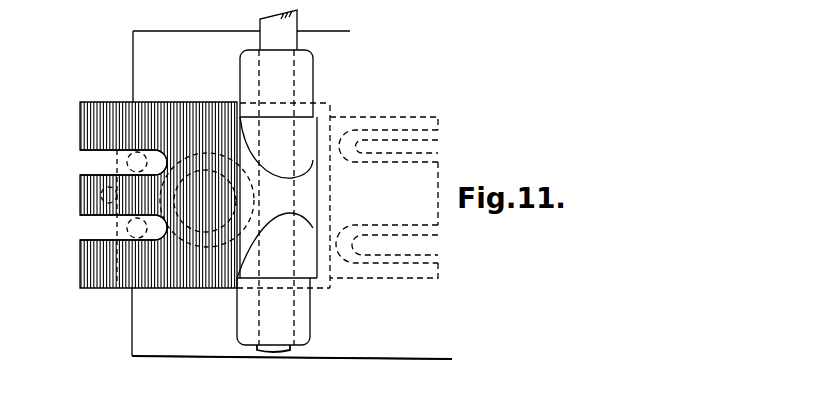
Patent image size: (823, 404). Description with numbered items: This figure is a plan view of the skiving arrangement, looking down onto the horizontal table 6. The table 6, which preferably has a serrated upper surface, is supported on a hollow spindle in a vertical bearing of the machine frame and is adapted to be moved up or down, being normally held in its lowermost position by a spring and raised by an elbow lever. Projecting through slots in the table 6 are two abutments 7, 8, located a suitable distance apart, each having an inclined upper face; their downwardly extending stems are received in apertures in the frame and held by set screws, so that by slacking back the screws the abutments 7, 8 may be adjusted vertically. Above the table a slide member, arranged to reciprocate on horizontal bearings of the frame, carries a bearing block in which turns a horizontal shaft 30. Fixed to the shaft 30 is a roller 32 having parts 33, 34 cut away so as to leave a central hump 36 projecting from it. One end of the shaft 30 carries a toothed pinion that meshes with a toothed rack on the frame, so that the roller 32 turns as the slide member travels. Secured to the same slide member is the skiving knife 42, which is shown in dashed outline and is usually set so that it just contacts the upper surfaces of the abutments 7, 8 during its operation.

The horizontal table 6 is at (180, 262).
The abutment 8 is at (122, 163).
The abutment 7 is at (122, 225).
The cut-away part 34 is at (273, 252).
The cut-away part 33 is at (285, 145).
The central hump 36 is at (297, 200).
The roller 32 is at (285, 282).
The horizontal shaft 30 is at (282, 352).
The skiving knife 42 is at (384, 196).